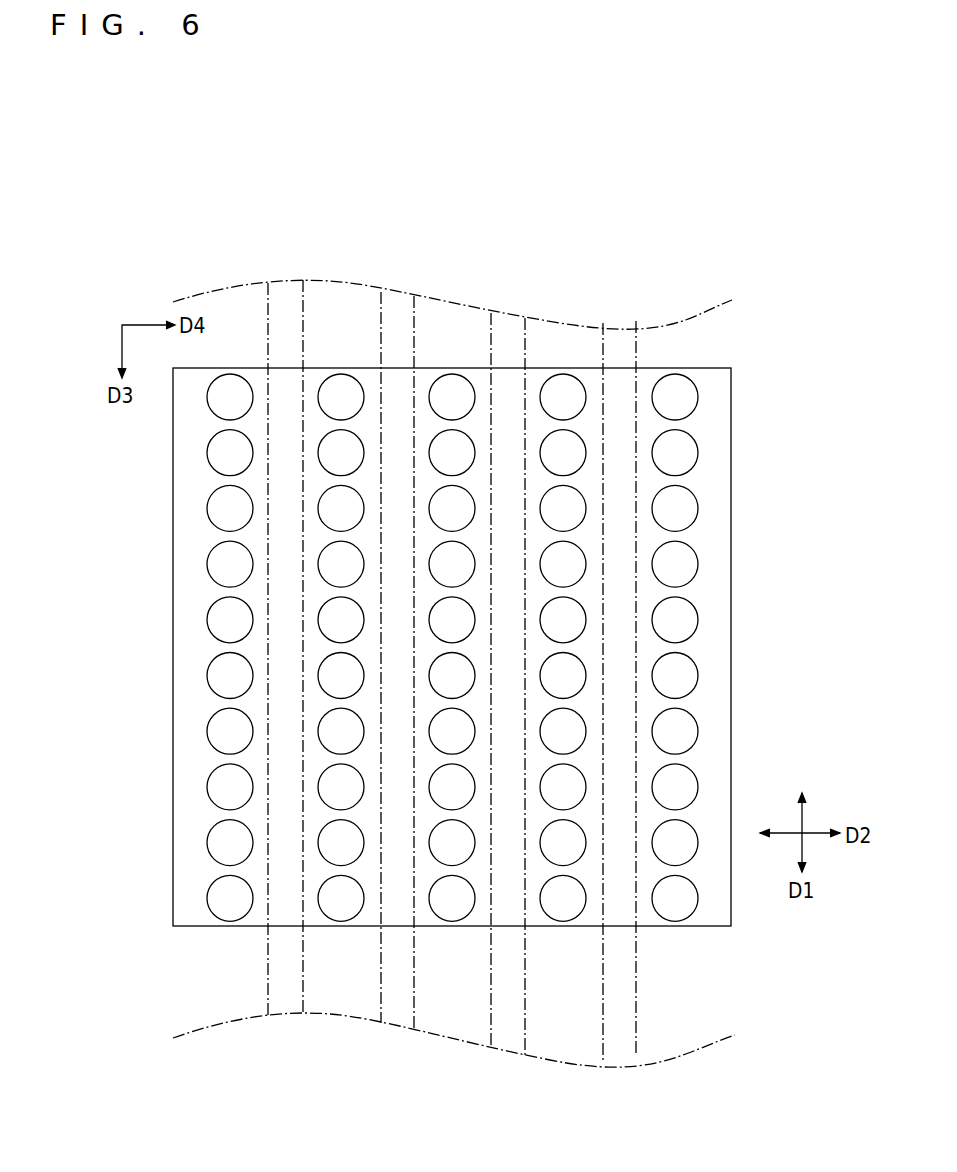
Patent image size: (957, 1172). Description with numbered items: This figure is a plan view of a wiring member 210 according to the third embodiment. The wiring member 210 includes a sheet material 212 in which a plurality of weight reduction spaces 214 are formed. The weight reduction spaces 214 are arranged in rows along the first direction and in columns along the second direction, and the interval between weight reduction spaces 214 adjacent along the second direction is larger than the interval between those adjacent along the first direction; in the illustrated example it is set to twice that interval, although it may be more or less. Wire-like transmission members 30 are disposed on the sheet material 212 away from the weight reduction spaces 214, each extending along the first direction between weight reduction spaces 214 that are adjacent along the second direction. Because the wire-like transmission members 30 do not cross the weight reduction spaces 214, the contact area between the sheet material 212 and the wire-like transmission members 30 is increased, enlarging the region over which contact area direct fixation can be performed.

The wiring member 210 is at (171, 182).
The sheet material 212 is at (740, 406).
The weight reduction space 214 is at (694, 459).
The wire-like transmission member 30 is at (491, 1013).